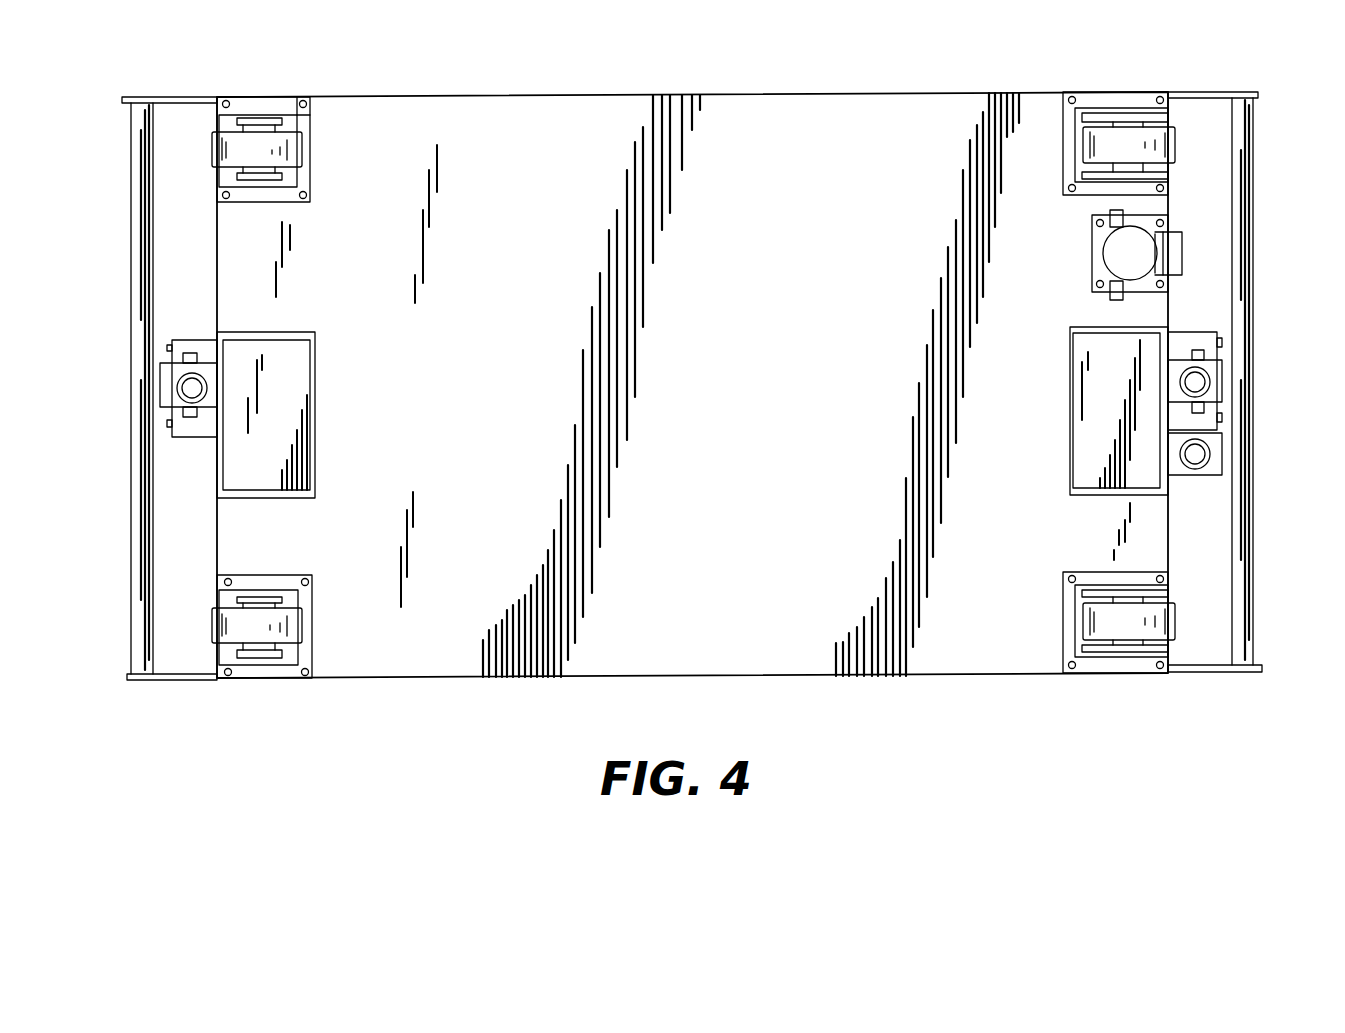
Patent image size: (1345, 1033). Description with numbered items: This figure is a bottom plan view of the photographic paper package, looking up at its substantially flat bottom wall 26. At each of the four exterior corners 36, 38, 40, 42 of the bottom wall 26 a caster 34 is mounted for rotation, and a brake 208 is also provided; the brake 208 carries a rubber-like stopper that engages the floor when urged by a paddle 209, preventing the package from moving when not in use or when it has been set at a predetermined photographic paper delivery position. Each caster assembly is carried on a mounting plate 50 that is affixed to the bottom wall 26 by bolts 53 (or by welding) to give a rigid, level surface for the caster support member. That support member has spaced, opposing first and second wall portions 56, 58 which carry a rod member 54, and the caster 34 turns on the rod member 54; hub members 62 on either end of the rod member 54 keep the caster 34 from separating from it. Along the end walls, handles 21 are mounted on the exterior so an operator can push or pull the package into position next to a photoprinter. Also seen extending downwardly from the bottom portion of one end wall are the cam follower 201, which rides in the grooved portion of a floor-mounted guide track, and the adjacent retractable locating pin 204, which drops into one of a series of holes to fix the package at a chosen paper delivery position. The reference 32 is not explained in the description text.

The handles 21 is at (131, 265).
The bottom wall 26 is at (912, 110).
The mounting plate 32 is at (418, 96).
The caster 34 is at (228, 130).
The exterior corner 36 is at (266, 131).
The exterior corner 38 is at (1167, 93).
The exterior corner 40 is at (217, 678).
The exterior corner 42 is at (1168, 673).
The mounting plate 50 is at (312, 165).
The bolts 53 is at (303, 98).
The rod member 54 is at (310, 115).
The first wall portion 56 is at (265, 182).
The second wall portion 58 is at (272, 112).
The hub member 62 is at (260, 117).
The cam follower 201 is at (177, 385).
The retractable locating pin 204 is at (1210, 450).
The brake 208 is at (1115, 258).
The paddle 209 is at (1183, 248).